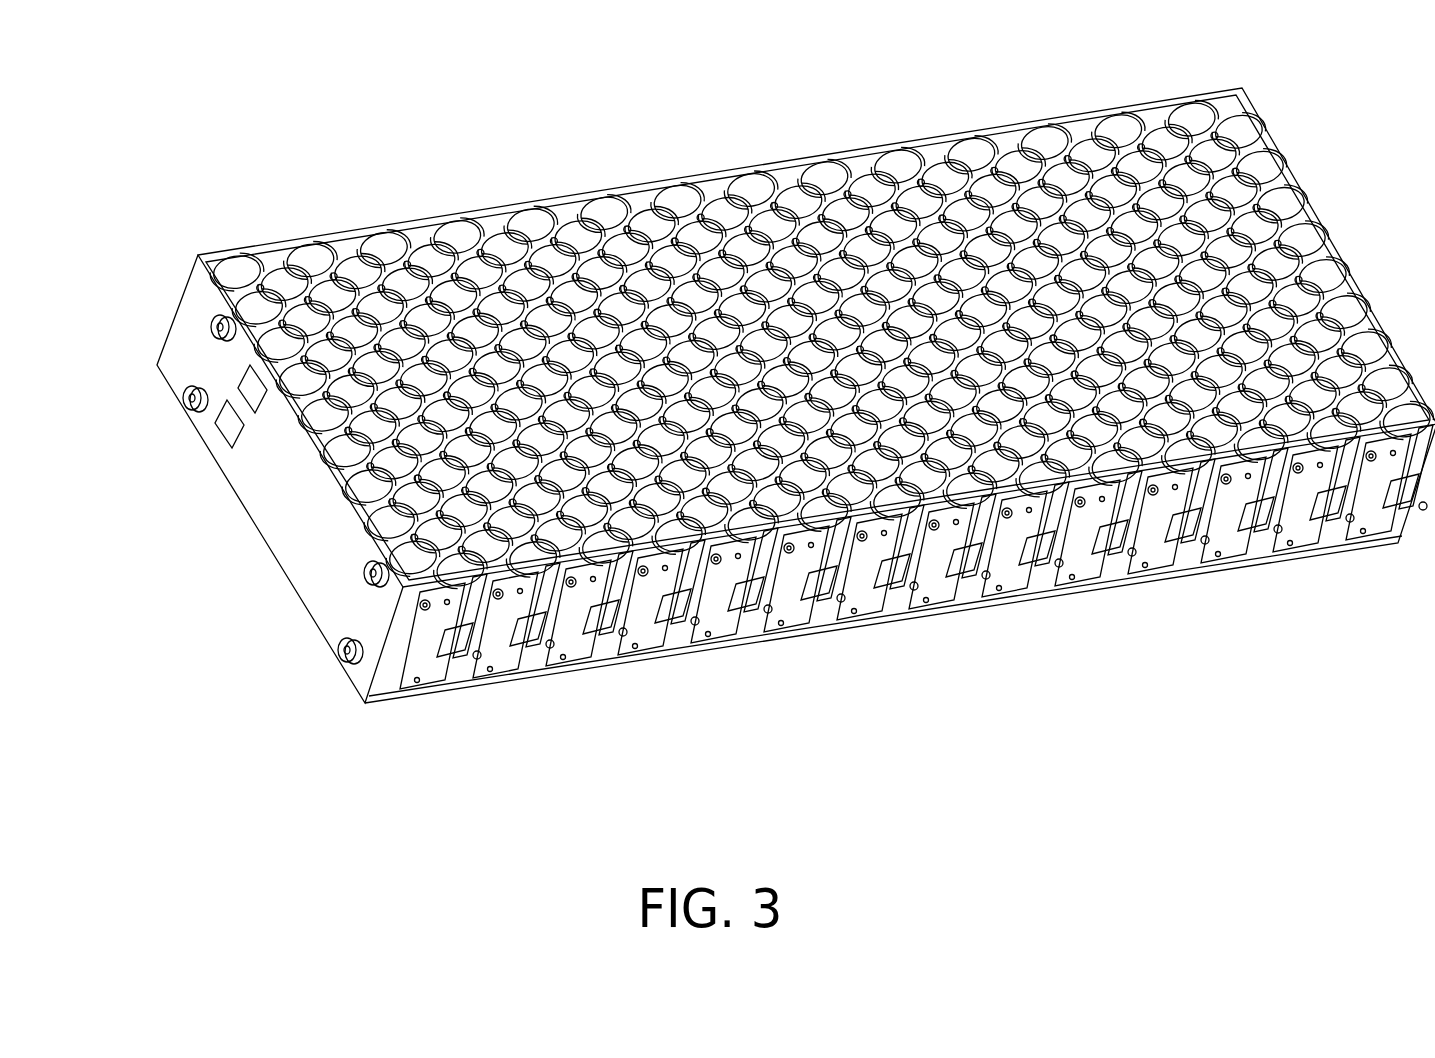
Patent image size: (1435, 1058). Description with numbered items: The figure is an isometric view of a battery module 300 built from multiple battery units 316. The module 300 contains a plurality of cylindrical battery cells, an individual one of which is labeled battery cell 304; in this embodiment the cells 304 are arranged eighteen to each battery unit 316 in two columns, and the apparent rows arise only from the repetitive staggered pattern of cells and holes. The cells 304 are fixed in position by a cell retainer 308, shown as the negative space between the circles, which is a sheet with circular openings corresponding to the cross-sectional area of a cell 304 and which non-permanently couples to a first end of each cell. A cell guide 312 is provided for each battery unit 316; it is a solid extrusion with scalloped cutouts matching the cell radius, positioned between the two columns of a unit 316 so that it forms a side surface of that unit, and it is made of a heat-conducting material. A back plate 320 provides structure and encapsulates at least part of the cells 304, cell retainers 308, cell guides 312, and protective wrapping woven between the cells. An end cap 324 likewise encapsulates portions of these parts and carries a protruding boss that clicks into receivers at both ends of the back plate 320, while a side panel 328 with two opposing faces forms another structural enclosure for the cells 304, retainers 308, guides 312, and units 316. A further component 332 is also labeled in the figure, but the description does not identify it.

The battery module 300 is at (760, 440).
The battery cell 304 is at (910, 140).
The cell retainer 308 is at (648, 178).
The cell guide 312 is at (862, 625).
The battery unit 316 is at (440, 630).
The back plate 320 is at (1258, 570).
The end cap 324 is at (247, 485).
The side panel 328 is at (288, 232).
The busbar clip 332 is at (1058, 580).